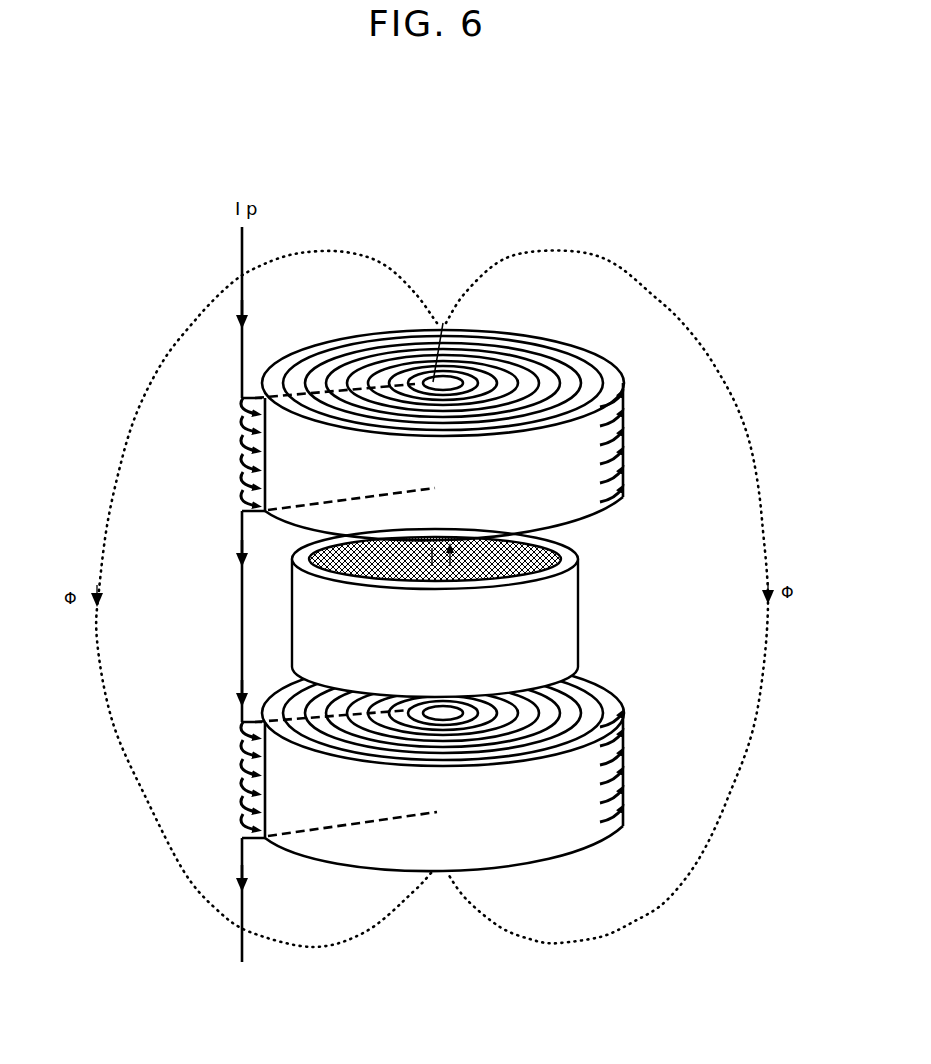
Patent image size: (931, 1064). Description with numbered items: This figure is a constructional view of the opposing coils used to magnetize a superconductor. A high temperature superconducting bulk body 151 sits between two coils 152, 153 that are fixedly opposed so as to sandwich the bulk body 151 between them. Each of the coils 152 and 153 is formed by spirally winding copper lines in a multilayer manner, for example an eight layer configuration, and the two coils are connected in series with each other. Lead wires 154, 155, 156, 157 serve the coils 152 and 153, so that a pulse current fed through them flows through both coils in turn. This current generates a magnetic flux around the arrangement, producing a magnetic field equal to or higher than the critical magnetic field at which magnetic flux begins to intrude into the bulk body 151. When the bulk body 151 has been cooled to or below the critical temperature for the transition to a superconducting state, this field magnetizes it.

The high temperature superconducting bulk body 151 is at (578, 597).
The coil 152 is at (625, 428).
The coil 153 is at (628, 756).
The lead wire 154 is at (242, 262).
The lead wire 155 is at (242, 551).
The lead wire 156 is at (242, 684).
The lead wire 157 is at (242, 946).